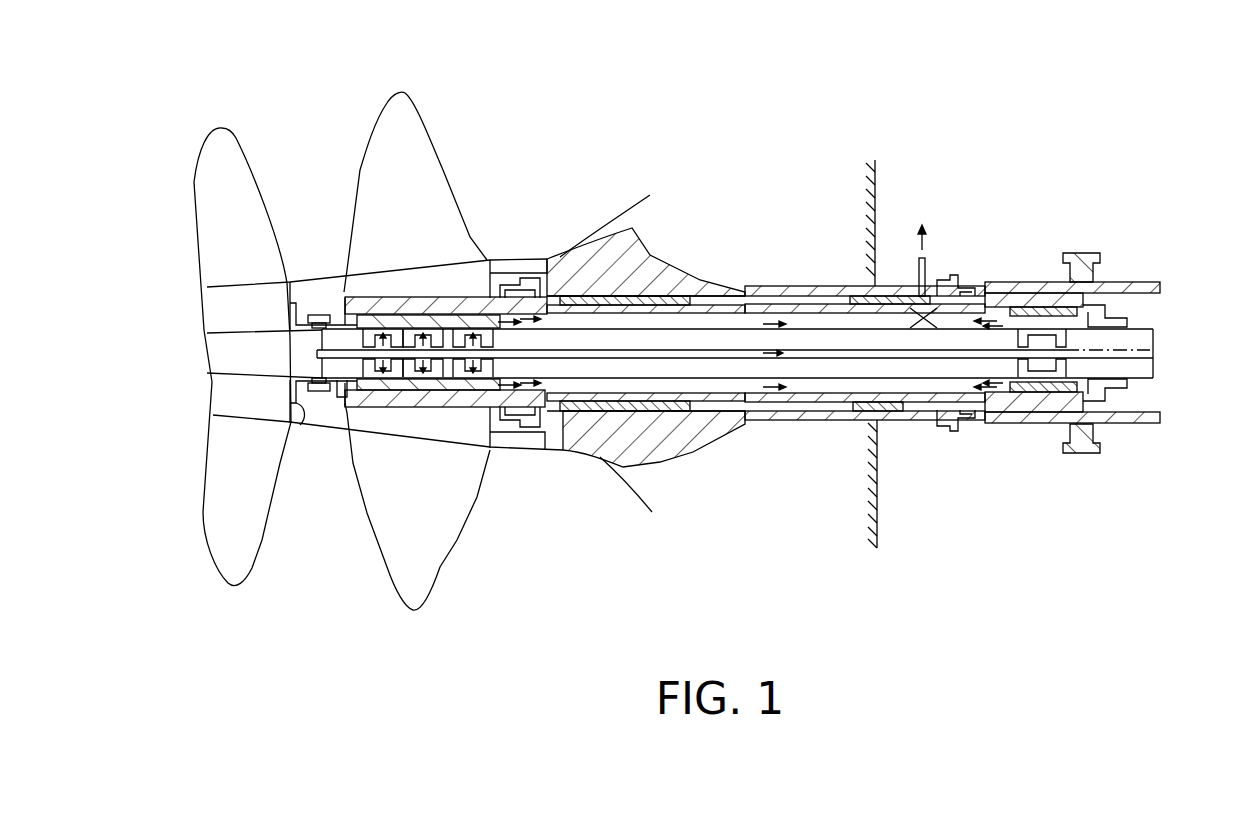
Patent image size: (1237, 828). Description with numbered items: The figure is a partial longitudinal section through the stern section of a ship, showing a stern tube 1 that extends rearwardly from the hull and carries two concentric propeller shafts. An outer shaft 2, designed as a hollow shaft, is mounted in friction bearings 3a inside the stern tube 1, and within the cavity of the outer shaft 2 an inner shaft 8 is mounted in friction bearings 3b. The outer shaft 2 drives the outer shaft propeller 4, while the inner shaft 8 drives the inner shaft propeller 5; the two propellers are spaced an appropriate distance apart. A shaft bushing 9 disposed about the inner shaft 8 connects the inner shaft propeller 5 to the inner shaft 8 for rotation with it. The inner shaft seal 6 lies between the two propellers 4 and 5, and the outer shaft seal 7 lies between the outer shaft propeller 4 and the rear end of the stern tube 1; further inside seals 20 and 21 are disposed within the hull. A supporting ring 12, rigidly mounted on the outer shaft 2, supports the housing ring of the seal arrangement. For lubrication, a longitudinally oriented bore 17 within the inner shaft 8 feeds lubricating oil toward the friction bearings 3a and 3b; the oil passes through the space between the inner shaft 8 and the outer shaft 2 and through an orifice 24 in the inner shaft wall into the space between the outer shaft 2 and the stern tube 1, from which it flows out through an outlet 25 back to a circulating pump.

The stern tube 1 is at (640, 268).
The outer shaft 2 is at (410, 303).
The friction bearings 3a is at (695, 292).
The friction bearings 3b is at (468, 395).
The outer shaft propeller 4 is at (410, 133).
The inner shaft propeller 5 is at (220, 163).
The inner shaft seal 6 is at (313, 305).
The outer shaft seal 7 is at (520, 278).
The inner shaft 8 is at (240, 357).
The shaft bushing 9 is at (300, 404).
The supporting ring 12 is at (340, 398).
The longitudinally oriented bore 17 is at (724, 356).
The inside seal 20 is at (960, 280).
The inside seal 21 is at (1103, 310).
The orifice 24 is at (912, 304).
The outlet 25 is at (925, 257).